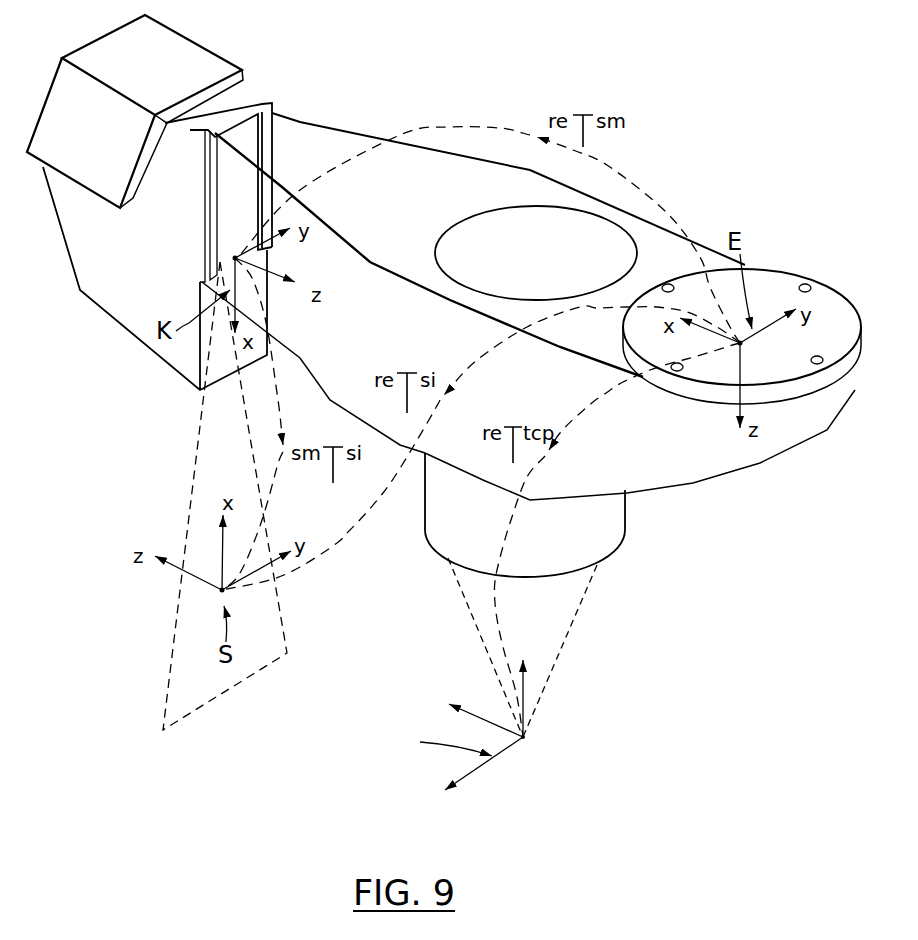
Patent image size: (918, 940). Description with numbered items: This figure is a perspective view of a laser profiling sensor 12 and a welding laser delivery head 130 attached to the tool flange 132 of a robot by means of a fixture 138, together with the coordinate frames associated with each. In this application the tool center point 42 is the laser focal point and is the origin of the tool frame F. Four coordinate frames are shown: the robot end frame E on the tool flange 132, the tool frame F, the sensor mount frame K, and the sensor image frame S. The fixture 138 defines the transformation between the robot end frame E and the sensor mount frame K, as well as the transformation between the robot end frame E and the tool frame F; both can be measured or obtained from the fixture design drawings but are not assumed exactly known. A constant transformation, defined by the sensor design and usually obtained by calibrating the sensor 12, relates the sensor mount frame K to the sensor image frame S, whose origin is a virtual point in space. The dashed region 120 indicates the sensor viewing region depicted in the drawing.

The laser profiling sensor 12 is at (70, 255).
The fixture 138 is at (330, 124).
The tool flange 132 is at (790, 268).
The welding laser delivery head 130 is at (625, 513).
The sensor field of view 120 is at (190, 483).
The tool center point 42 is at (533, 737).